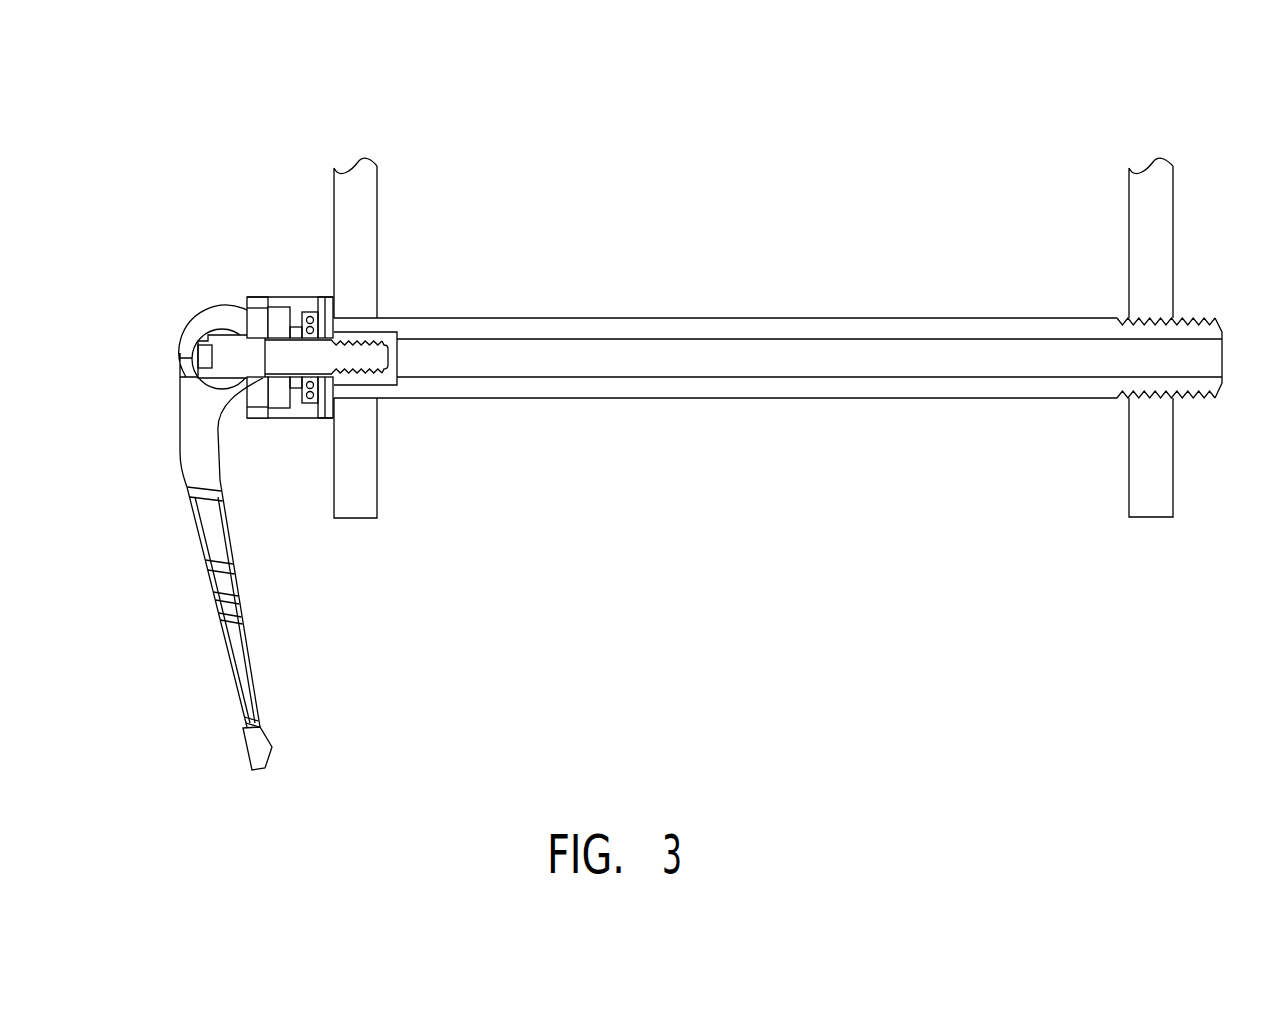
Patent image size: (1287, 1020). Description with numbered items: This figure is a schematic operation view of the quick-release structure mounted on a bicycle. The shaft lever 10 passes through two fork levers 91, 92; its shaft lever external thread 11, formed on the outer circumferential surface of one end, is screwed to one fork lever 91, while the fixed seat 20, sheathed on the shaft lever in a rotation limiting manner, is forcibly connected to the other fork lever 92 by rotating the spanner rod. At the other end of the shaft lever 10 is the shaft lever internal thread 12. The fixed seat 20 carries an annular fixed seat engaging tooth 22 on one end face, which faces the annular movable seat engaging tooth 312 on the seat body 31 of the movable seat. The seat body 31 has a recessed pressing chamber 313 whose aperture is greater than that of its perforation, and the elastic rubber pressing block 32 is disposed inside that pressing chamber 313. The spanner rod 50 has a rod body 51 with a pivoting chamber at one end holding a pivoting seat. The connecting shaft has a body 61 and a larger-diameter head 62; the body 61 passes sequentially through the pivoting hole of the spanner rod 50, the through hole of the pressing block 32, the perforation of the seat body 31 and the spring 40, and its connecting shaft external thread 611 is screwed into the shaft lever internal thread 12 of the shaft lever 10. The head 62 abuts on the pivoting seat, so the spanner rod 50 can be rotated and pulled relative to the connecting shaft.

The shaft lever 10 is at (767, 327).
The shaft lever external thread 11 is at (1200, 398).
The shaft lever internal thread 12 is at (385, 337).
The fixed seat 20 is at (323, 297).
The fixed seat engaging tooth 22 is at (326, 420).
The seat body 31 is at (292, 306).
The pressing block 32 is at (271, 418).
The movable seat engaging tooth 312 is at (302, 420).
The pressing chamber 313 is at (260, 297).
The spring 40 is at (310, 312).
The spanner rod 50 is at (185, 848).
The rod body 51 is at (251, 748).
The body 61 is at (258, 368).
The head 62 is at (210, 325).
The connecting shaft external thread 611 is at (372, 380).
The fork lever 91 is at (1160, 232).
The fork lever 92 is at (378, 225).